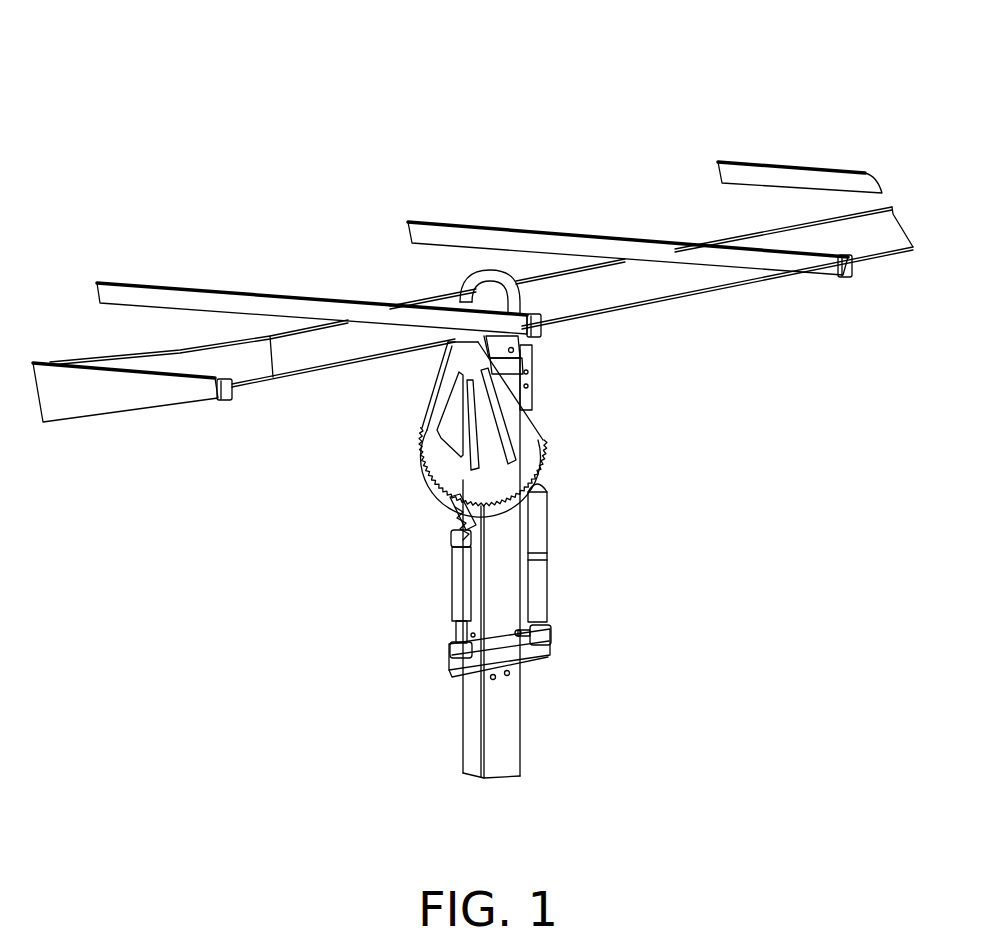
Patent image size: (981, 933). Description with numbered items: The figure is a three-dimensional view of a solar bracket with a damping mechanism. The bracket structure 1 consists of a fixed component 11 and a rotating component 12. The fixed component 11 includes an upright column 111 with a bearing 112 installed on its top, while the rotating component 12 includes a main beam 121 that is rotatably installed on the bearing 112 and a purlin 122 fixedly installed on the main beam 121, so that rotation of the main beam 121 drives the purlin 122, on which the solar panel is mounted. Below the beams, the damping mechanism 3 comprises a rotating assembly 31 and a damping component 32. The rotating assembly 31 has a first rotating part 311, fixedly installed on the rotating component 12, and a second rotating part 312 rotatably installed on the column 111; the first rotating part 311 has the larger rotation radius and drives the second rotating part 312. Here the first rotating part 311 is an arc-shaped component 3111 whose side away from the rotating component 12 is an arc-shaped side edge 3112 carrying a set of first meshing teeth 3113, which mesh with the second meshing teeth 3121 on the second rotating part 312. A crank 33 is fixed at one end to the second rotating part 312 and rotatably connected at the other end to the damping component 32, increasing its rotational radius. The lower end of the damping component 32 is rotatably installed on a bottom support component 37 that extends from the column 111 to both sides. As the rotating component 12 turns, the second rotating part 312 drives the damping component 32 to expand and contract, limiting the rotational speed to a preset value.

The bracket structure 1 is at (302, 61).
The fixed component 11 is at (344, 121).
The column 111 is at (498, 730).
The bearing 112 is at (503, 288).
The rotating component 12 is at (403, 74).
The main beam 121 is at (640, 283).
The purlin 122 is at (533, 248).
The damping mechanism 3 is at (204, 595).
The rotating assembly 31 is at (200, 488).
The first rotating part 311 is at (715, 449).
The arc-shaped component 3111 is at (536, 471).
The arc-shaped side edge 3112 is at (442, 452).
The first meshing teeth 3113 is at (453, 473).
The second rotating part 312 is at (715, 501).
The second meshing teeth 3121 is at (537, 503).
The damping component 32 is at (460, 587).
The crank 33 is at (460, 514).
The bottom support component 37 is at (548, 660).